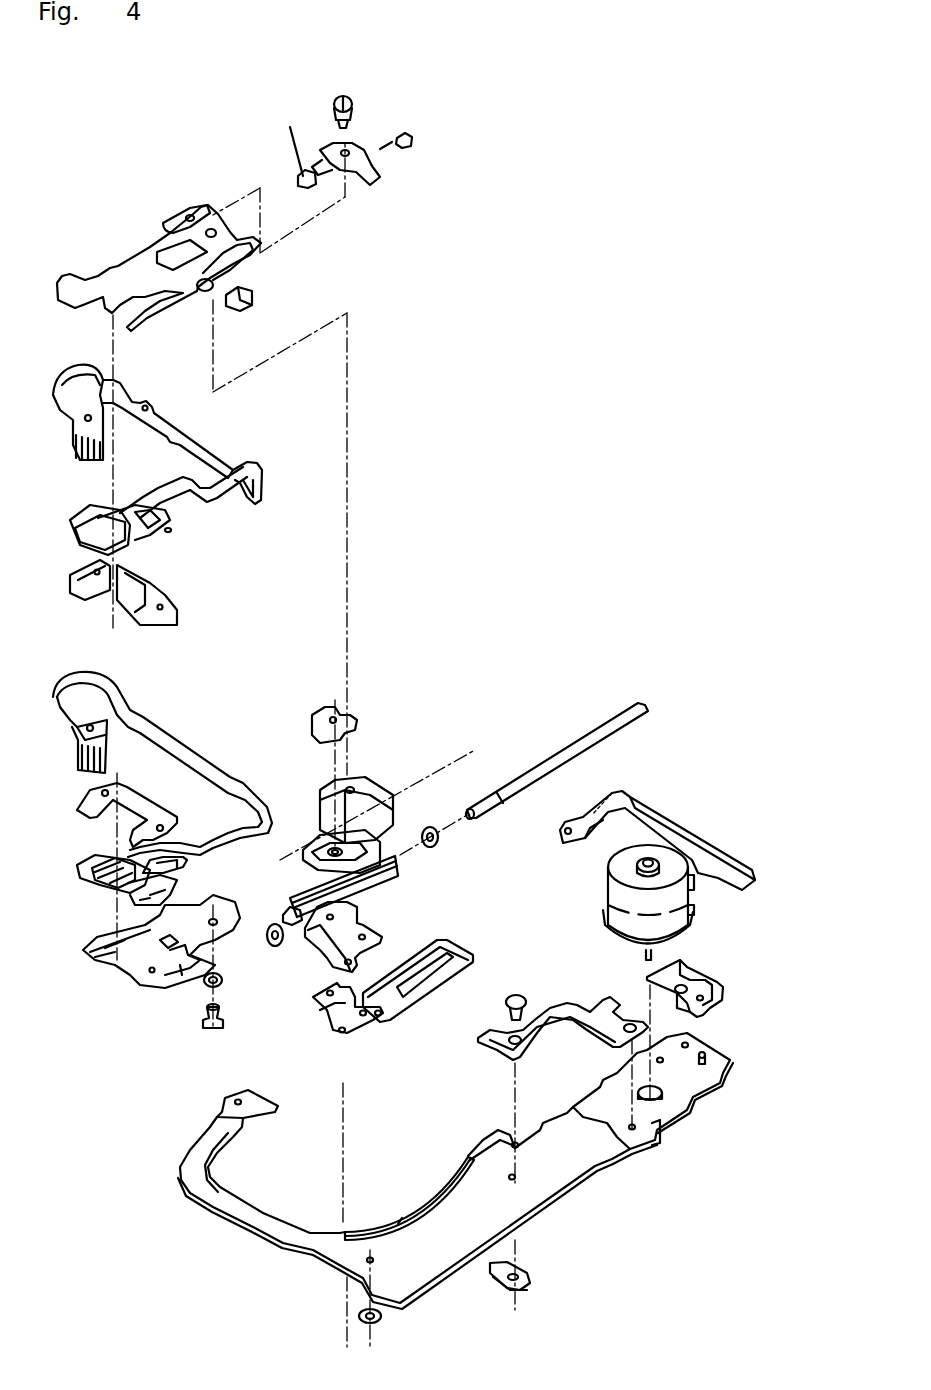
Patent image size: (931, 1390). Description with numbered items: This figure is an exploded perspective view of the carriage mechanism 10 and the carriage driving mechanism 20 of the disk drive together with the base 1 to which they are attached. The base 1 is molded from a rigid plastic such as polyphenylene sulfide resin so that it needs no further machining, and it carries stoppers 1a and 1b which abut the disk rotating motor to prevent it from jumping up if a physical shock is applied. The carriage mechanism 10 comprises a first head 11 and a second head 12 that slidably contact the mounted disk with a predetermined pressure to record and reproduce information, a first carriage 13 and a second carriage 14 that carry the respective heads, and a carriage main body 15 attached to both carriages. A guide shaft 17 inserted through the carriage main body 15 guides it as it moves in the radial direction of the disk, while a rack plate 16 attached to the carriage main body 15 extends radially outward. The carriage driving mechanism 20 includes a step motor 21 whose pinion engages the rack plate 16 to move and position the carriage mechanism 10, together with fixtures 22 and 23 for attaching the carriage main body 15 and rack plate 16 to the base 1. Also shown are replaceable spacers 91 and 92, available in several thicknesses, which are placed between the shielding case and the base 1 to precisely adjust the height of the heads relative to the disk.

The base 1 is at (455, 1171).
The stopper 1a is at (270, 1115).
The stopper 1b is at (433, 1200).
The carriage mechanism 10 is at (389, 634).
The first head 11 is at (100, 893).
The second head 12 is at (97, 543).
The first carriage 13 is at (190, 955).
The second carriage 14 is at (137, 248).
The carriage main body 15 is at (327, 948).
The rack plate 16 is at (430, 942).
The guide shaft 17 is at (523, 772).
The carriage driving mechanism 20 is at (716, 829).
The step motor 21 is at (613, 890).
The fixture 22 is at (707, 970).
The fixture 23 is at (557, 1006).
The spacer 91 is at (530, 1283).
The spacer 92 is at (383, 1317).